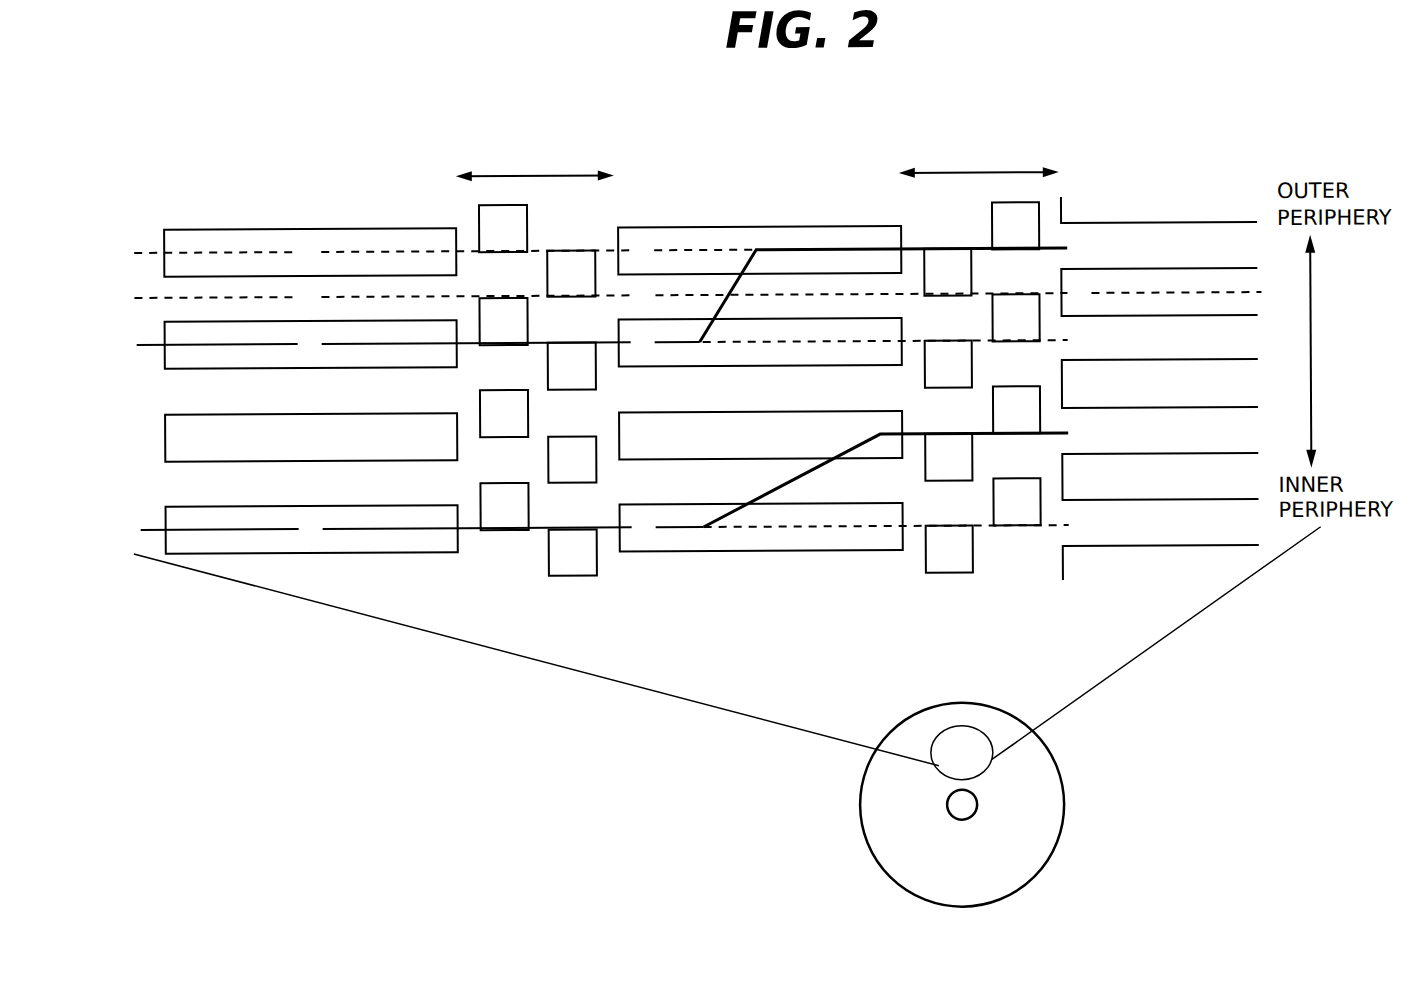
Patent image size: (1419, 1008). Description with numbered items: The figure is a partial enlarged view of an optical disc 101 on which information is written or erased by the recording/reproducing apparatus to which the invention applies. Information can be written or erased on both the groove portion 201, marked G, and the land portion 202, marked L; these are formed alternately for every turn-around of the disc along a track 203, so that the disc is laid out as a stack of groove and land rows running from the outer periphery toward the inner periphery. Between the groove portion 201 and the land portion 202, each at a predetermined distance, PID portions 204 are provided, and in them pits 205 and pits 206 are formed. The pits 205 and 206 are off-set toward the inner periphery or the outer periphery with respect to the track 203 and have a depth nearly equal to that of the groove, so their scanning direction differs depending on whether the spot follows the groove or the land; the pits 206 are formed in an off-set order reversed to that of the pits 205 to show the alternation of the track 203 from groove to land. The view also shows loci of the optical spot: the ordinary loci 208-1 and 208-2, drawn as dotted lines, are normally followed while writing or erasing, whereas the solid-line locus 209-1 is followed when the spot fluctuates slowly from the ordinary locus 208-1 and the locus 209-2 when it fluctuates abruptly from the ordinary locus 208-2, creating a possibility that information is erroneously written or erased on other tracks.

The optical disc 101 is at (1048, 805).
The groove portion 201 is at (699, 480).
The land portion 202 is at (602, 536).
The track 203 is at (688, 293).
The PID portion 204 is at (757, 146).
The pits 205 is at (503, 529).
The pits 206 is at (1017, 527).
The ordinary locus 208-1 is at (1092, 342).
The ordinary locus 208-2 is at (1092, 527).
The off-track locus 209-1 is at (1262, 249).
The off-track locus 209-2 is at (1092, 435).